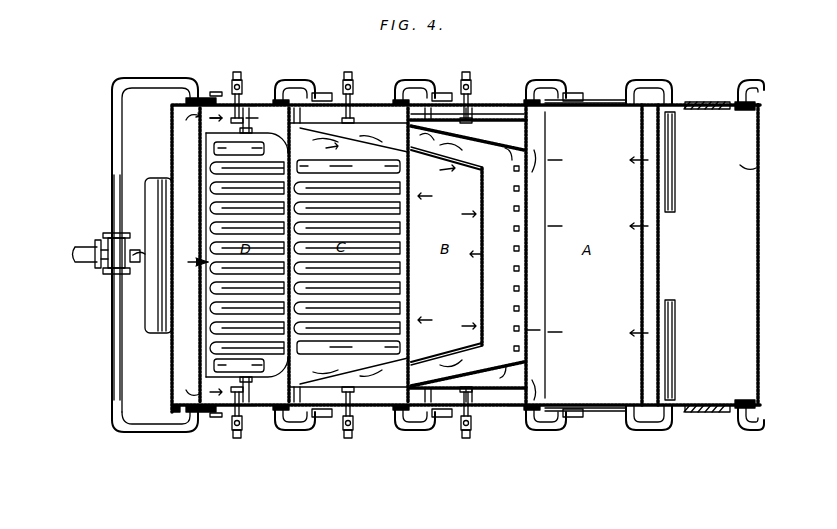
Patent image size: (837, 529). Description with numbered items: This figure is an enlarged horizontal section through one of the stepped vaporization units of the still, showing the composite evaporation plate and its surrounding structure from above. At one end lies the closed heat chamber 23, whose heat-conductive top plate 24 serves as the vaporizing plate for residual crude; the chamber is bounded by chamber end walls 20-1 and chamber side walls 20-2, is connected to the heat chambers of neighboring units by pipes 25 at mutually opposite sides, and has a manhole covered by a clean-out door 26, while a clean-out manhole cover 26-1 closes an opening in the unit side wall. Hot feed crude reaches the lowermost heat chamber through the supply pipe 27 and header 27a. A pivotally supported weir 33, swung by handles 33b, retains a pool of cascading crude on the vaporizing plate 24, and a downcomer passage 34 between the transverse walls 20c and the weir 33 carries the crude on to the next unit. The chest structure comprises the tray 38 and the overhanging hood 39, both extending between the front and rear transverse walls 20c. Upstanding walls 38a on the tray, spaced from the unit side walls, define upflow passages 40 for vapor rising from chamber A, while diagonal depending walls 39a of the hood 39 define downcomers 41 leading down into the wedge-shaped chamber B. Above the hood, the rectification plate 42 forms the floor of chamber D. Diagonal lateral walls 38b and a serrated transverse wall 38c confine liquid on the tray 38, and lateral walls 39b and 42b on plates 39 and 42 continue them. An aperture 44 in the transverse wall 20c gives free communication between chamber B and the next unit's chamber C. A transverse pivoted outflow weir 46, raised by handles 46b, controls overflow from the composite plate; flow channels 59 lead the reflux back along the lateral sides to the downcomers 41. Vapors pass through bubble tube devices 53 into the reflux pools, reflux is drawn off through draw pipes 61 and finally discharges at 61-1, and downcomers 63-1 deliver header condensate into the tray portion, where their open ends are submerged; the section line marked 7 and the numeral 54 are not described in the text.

The section indicator arrow 7 is at (192, 263).
The chamber end wall 20-1 is at (661, 240).
The chamber side wall 20-2 is at (742, 100).
The transverse wall 20c is at (172, 388).
The heat chamber 23 is at (758, 162).
The top plate 24 is at (573, 242).
The pipe 25 is at (292, 80).
The clean-out door 26 is at (700, 102).
The clean-out manhole cover 26-1 is at (598, 102).
The supply pipe 27 is at (86, 266).
The header 27a is at (112, 163).
The weir 33 is at (530, 296).
The handle 33b is at (326, 93).
The downcomer passage 34 is at (194, 345).
The vaporizing plate or tray 38 is at (484, 318).
The upstanding wall 38a is at (492, 128).
The lateral wall 38b is at (424, 166).
The transverse wall 38c is at (482, 280).
The hood 39 is at (348, 256).
The depending wall 39a is at (366, 118).
The lateral wall 39b is at (348, 256).
The upflow passage 40 is at (376, 118).
The downcomer 41 is at (344, 128).
The rectification plate 42 is at (282, 118).
The lateral wall 42b is at (824, 508).
The aperture 44 is at (411, 226).
The outflow weir 46 is at (200, 284).
The handle 46b is at (210, 92).
The bubble tube device 53 is at (210, 222).
The heat exchange tube 54 is at (380, 286).
The flow channel 59 is at (247, 118).
The draw pipe 61 is at (240, 72).
The discharge 61-1 is at (136, 248).
The downcomer 63-1 is at (522, 248).